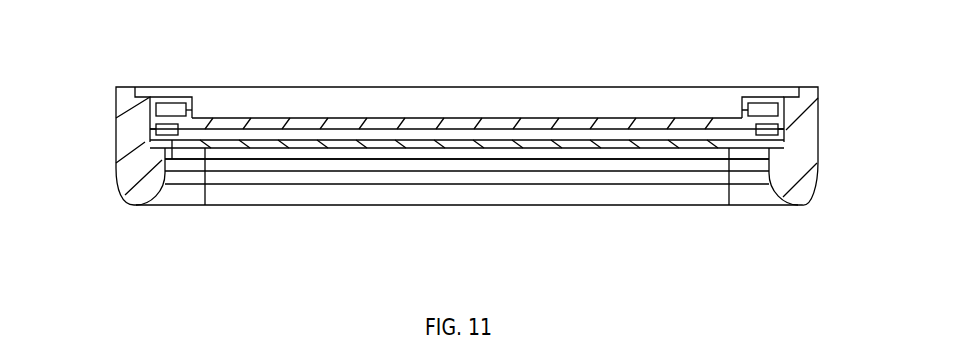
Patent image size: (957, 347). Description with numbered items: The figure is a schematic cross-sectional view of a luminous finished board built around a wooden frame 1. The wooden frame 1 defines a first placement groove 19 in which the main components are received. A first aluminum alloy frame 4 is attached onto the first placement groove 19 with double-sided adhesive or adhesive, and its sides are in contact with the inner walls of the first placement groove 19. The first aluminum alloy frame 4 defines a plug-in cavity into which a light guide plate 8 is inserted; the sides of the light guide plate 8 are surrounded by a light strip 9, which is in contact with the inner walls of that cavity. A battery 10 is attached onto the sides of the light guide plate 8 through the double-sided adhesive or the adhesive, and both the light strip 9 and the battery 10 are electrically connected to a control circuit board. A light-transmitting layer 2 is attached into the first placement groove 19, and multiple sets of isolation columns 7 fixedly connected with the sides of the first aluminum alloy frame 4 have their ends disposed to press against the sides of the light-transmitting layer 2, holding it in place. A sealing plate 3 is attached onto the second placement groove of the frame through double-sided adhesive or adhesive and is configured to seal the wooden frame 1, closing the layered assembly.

The wooden frame 1 is at (114, 163).
The light-transmitting layer 2 is at (372, 161).
The sealing plate 3 is at (313, 85).
The first aluminum alloy frame 4 is at (150, 134).
The isolation columns 7 is at (463, 148).
The light guide plate 8 is at (382, 119).
The light strip 9 is at (157, 115).
The battery 10 is at (482, 104).
The first placement groove 19 is at (785, 143).